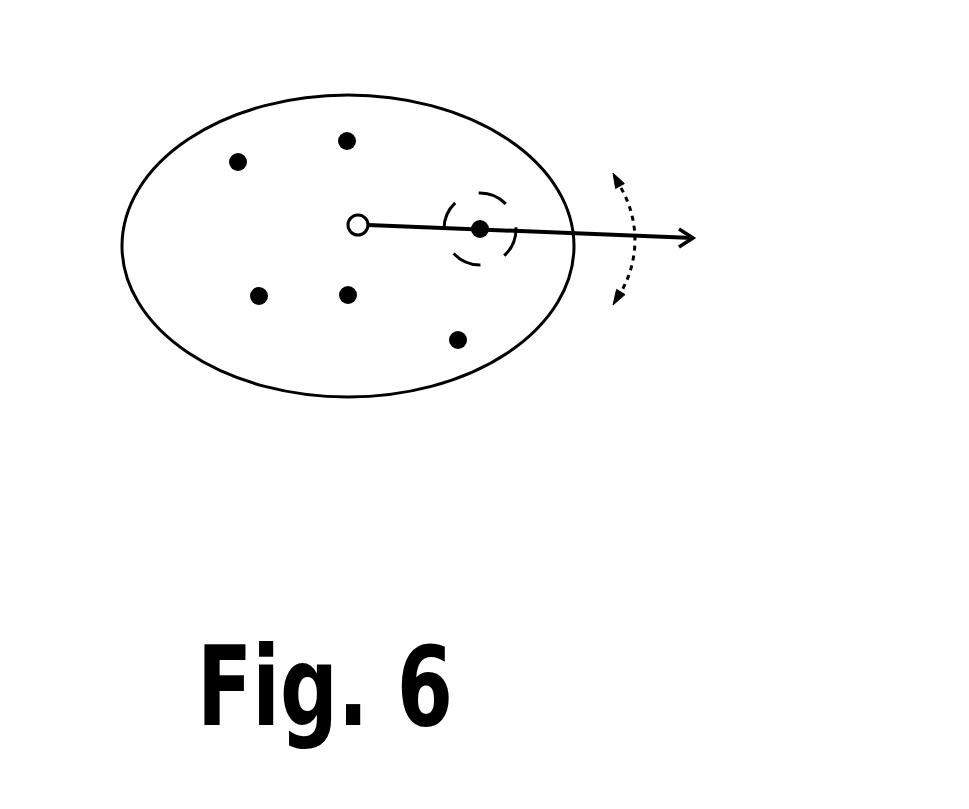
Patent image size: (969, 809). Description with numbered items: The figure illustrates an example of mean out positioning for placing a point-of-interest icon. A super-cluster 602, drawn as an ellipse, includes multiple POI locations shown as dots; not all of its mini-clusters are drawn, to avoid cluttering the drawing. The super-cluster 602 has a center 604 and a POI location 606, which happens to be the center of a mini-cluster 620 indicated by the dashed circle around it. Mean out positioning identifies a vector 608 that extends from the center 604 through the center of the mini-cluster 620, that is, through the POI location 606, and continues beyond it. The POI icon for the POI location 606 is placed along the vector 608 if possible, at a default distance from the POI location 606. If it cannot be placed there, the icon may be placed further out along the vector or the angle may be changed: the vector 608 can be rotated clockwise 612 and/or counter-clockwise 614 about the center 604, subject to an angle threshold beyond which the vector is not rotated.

The super-cluster 602 is at (188, 356).
The center 604 is at (348, 224).
The POI location 606 is at (480, 229).
The vector 608 is at (655, 238).
The clockwise rotation 612 is at (632, 283).
The counter-clockwise rotation 614 is at (635, 202).
The mini-cluster 620 is at (452, 252).